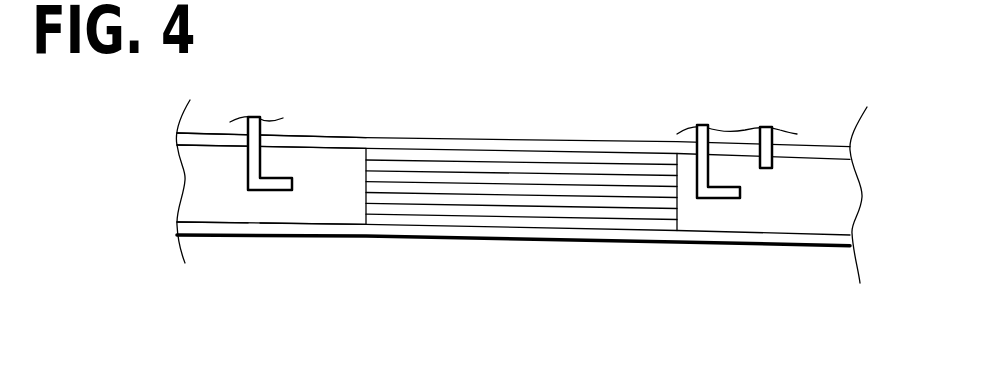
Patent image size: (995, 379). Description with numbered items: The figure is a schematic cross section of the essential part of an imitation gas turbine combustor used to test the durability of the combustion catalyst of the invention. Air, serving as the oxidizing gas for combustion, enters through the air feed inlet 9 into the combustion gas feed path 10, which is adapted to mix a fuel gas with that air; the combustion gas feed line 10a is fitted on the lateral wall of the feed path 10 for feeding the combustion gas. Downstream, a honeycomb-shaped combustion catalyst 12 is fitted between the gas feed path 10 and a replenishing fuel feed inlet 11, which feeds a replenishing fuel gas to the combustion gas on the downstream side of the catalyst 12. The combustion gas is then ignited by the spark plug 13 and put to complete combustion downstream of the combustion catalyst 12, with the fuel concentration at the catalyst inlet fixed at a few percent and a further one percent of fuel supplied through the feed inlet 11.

The air feed inlet 9 is at (213, 188).
The combustion gas feed path 10 is at (315, 188).
The combustion gas feed line 10a is at (262, 158).
The replenishing fuel feed inlet 11 is at (712, 202).
The combustion catalyst 12 is at (505, 190).
The spark plug 13 is at (778, 160).